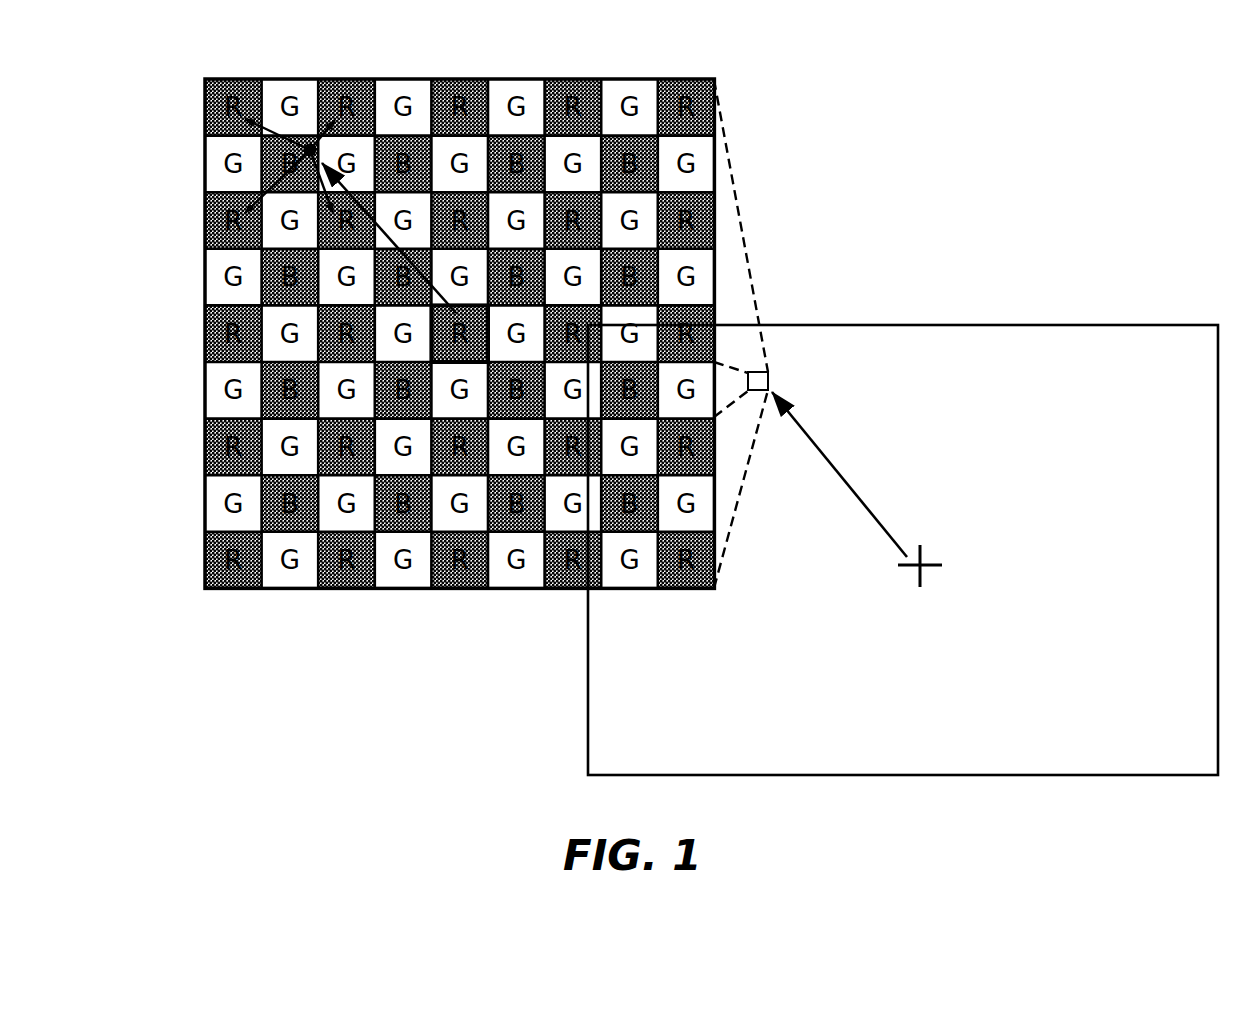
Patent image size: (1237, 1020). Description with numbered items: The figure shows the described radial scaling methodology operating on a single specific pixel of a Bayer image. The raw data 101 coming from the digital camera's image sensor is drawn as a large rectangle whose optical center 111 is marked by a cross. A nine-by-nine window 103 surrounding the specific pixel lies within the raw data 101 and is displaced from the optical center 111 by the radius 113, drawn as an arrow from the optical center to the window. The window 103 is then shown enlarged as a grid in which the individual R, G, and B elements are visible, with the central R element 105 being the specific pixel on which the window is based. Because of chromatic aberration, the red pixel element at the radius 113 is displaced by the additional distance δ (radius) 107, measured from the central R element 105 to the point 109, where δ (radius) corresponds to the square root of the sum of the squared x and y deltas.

The raw data 101 is at (1085, 325).
The 9×9 window 103 is at (766, 381).
The central R element 105 is at (462, 350).
The δ (radius) 107 is at (378, 222).
The point 109 is at (310, 148).
The optical center 111 is at (925, 553).
The radius 113 is at (848, 485).